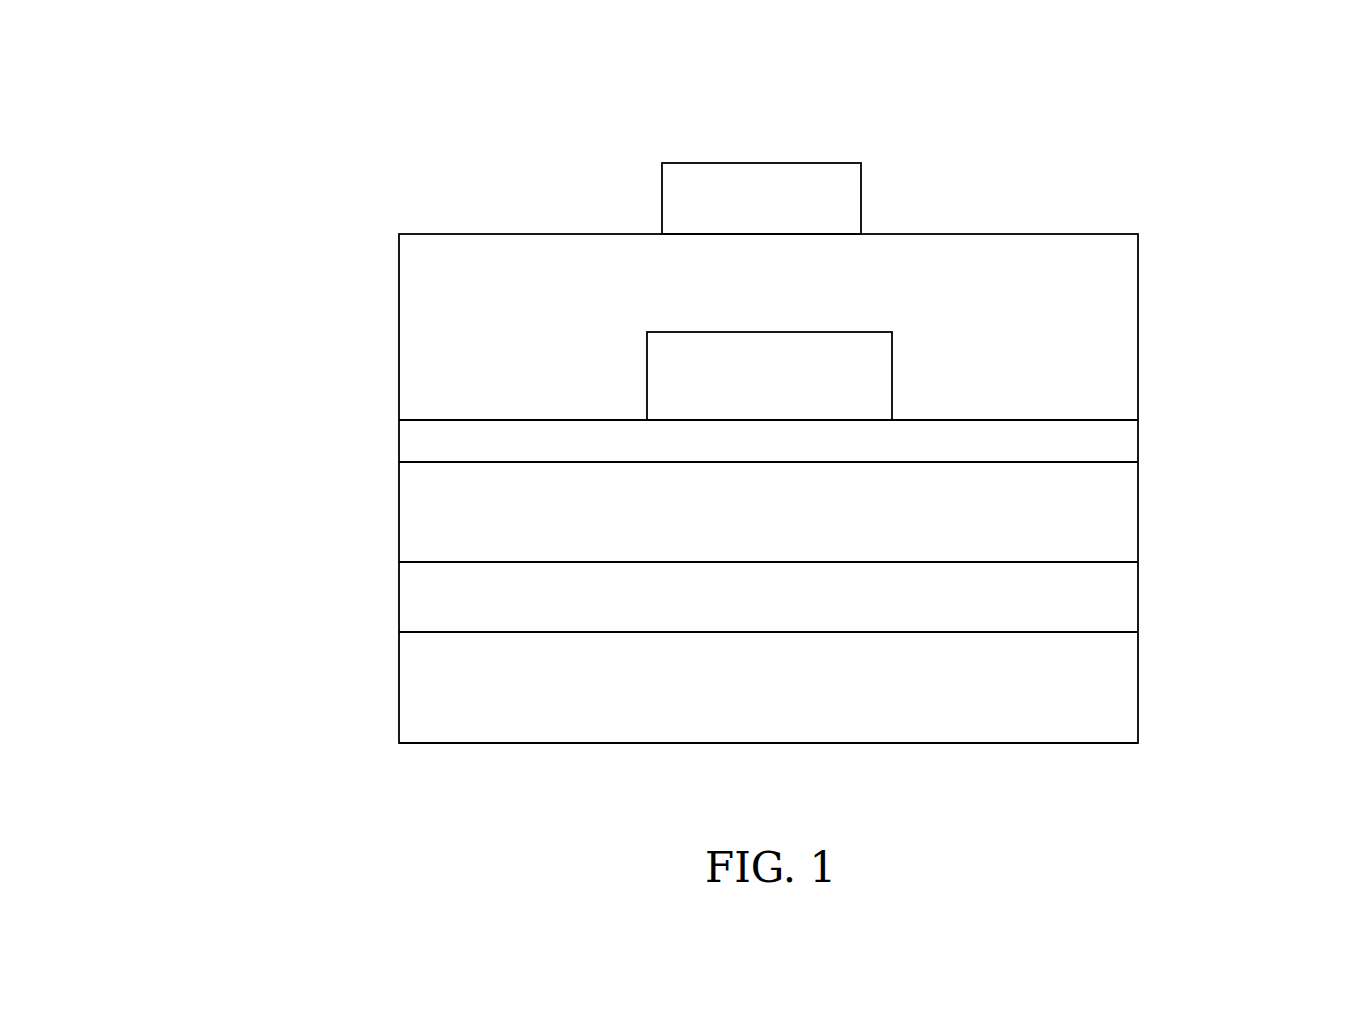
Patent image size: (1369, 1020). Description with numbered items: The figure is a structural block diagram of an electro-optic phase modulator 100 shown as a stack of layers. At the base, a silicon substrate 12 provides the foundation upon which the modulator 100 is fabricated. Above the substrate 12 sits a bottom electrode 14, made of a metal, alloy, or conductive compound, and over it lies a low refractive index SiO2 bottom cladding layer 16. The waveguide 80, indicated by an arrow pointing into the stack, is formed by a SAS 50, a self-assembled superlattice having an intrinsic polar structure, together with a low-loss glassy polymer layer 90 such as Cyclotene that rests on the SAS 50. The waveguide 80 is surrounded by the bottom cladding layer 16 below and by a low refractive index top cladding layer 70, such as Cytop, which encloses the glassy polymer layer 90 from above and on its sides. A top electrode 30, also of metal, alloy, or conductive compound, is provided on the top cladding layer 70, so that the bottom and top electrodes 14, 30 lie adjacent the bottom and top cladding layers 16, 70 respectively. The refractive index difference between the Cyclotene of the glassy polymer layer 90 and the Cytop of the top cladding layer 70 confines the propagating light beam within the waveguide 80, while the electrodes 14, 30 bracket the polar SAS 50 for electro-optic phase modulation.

The electro-optic phase modulator 100 is at (410, 178).
The top electrode 30 is at (845, 199).
The top cladding layer 70 is at (1120, 290).
The glassy polymer layer 90 is at (662, 376).
The waveguide 80 is at (962, 356).
The SAS 50 is at (1105, 443).
The SiO2 bottom cladding layer 16 is at (430, 525).
The bottom electrode 14 is at (1103, 598).
The silicon substrate 12 is at (417, 702).